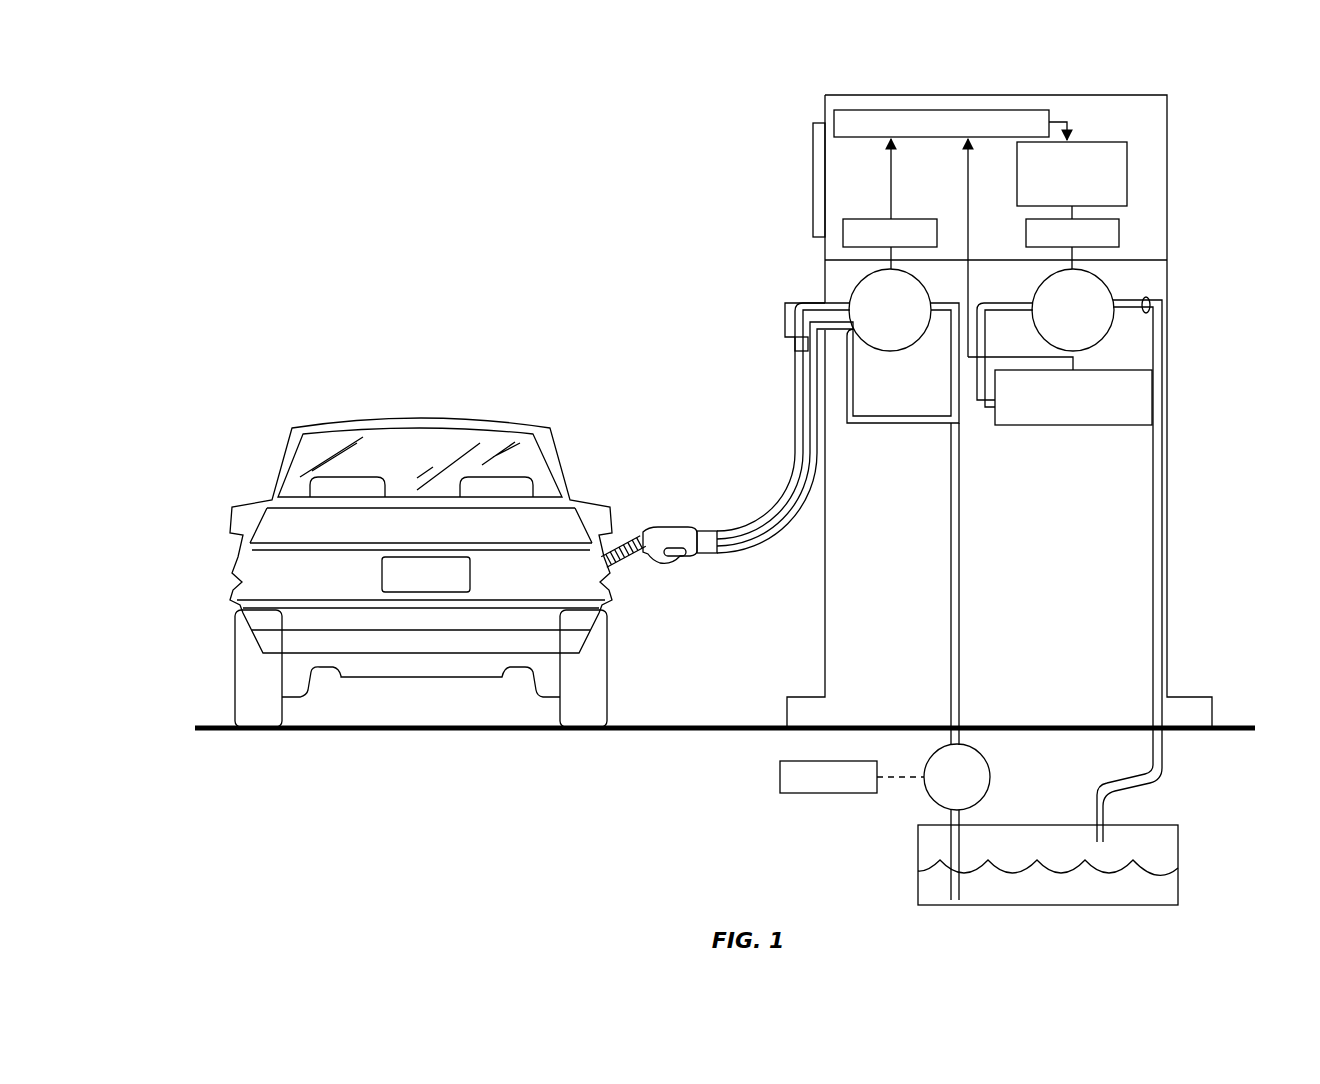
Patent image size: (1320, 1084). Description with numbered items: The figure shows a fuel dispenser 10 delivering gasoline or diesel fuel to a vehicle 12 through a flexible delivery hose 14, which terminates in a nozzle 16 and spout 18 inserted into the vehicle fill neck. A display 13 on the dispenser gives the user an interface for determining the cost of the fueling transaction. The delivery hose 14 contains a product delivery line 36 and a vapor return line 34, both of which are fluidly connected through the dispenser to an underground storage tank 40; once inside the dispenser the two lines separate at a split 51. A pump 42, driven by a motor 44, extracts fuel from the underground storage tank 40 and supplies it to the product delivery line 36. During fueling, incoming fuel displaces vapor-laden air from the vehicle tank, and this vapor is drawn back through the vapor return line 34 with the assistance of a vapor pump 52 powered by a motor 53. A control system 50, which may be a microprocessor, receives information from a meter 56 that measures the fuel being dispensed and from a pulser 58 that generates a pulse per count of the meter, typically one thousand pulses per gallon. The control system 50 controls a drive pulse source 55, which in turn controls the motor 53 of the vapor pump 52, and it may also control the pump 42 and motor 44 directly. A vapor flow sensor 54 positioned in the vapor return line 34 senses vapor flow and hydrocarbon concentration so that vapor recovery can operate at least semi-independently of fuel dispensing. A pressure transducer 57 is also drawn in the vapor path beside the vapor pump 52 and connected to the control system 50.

The fuel dispenser 10 is at (1222, 158).
The vehicle 12 is at (490, 418).
The display 13 is at (808, 140).
The delivery hose 14 is at (788, 416).
The nozzle 16 is at (668, 528).
The spout 18 is at (621, 545).
The vapor return line 34 is at (950, 428).
The product delivery line 36 is at (961, 505).
The underground storage tank 40 is at (1180, 840).
The pump 42 is at (985, 760).
The motor 44 is at (796, 795).
The control system 50 is at (876, 140).
The split 51 is at (793, 343).
The vapor pump 52 is at (1100, 277).
The motor 53 is at (1119, 236).
The vapor flow sensor 54 is at (1146, 297).
The drive pulse source 55 is at (1105, 142).
The meter 56 is at (918, 276).
The pressure transducer 57 is at (1090, 426).
The pulser 58 is at (915, 219).